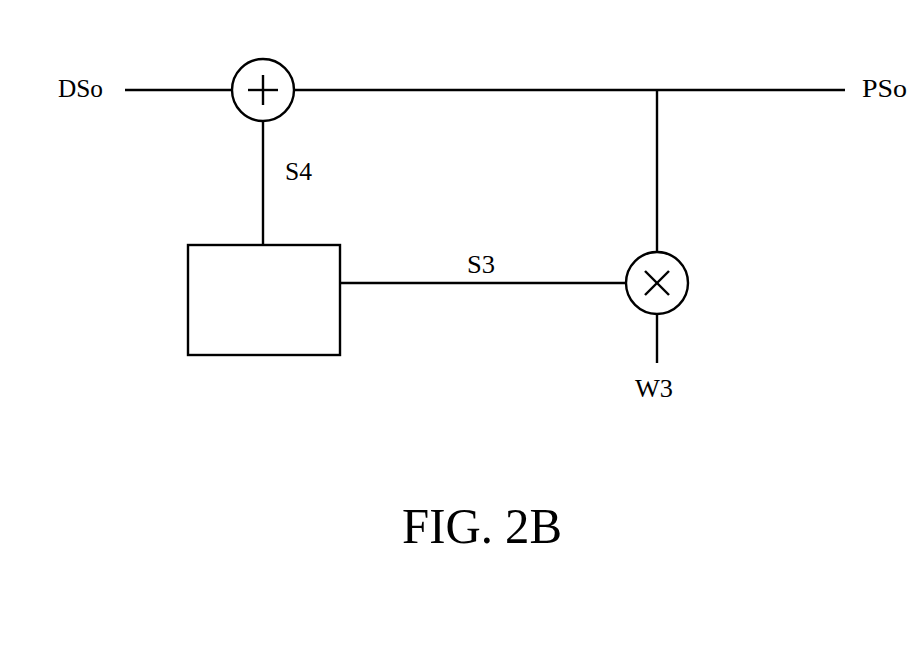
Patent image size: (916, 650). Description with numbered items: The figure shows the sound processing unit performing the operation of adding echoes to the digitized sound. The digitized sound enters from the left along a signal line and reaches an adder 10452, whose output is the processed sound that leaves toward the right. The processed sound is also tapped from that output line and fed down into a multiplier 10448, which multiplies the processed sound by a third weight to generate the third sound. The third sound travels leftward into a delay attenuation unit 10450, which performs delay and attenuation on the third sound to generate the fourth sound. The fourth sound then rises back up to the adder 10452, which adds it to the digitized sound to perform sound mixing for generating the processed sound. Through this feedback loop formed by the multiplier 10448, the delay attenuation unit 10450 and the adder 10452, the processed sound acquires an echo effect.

The adder 10452 is at (263, 59).
The delay attenuation unit 10450 is at (225, 244).
The multiplier 10448 is at (638, 253).